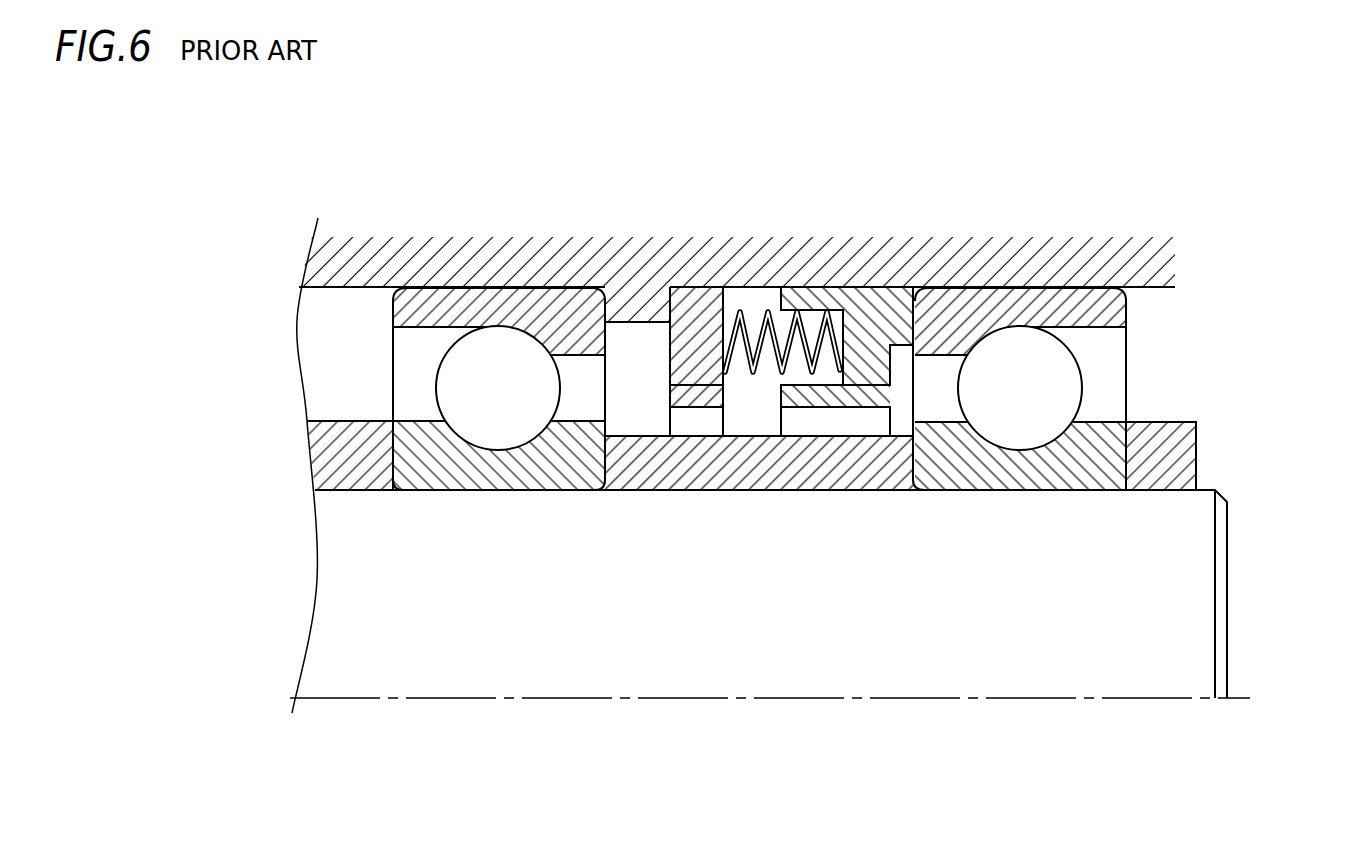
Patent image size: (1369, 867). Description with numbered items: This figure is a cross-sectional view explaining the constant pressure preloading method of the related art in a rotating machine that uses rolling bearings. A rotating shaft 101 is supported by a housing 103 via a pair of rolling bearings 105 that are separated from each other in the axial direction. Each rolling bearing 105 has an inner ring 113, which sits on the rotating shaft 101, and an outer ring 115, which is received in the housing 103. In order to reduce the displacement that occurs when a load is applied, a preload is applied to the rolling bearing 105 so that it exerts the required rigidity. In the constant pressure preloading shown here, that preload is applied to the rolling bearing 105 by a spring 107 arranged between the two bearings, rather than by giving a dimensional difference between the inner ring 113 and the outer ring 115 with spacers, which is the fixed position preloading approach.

The rotating shaft 101 is at (1228, 590).
The housing 103 is at (1160, 262).
The rolling bearing 105 is at (757, 388).
The spring 107 is at (752, 297).
The inner ring 113 is at (390, 452).
The outer ring 115 is at (393, 308).